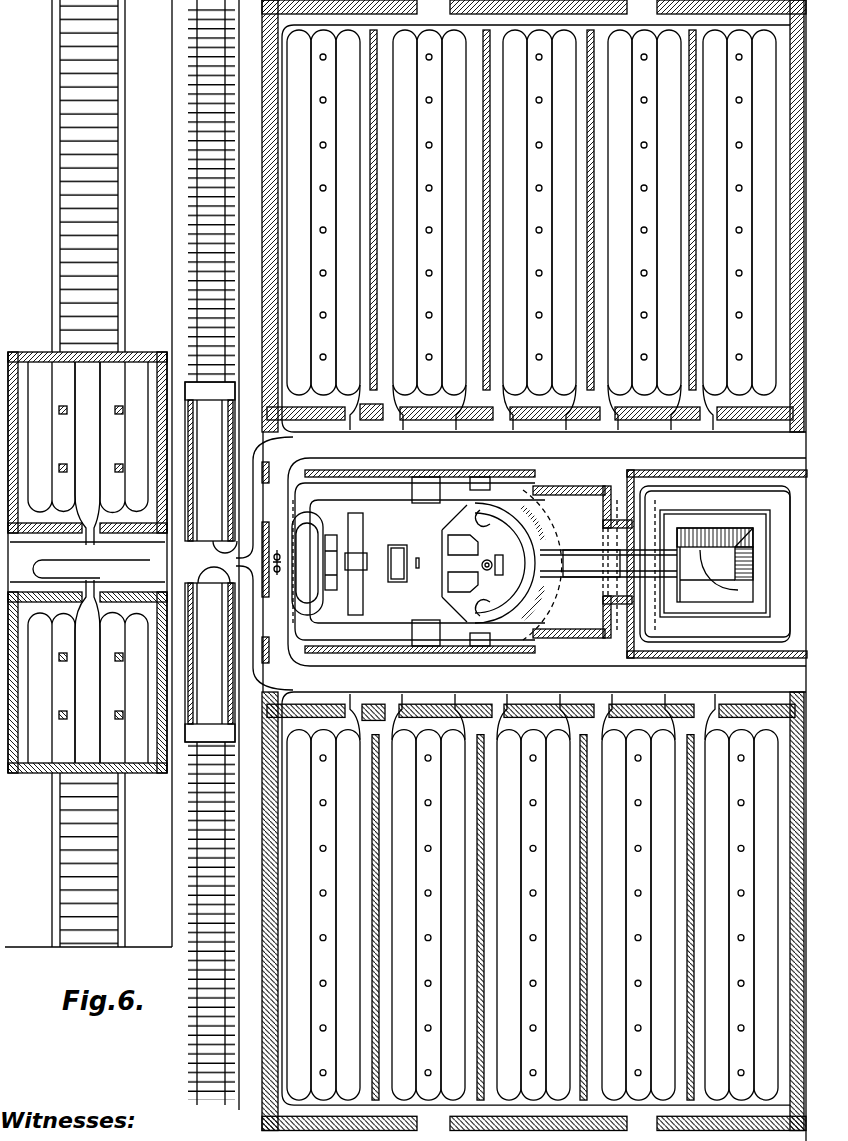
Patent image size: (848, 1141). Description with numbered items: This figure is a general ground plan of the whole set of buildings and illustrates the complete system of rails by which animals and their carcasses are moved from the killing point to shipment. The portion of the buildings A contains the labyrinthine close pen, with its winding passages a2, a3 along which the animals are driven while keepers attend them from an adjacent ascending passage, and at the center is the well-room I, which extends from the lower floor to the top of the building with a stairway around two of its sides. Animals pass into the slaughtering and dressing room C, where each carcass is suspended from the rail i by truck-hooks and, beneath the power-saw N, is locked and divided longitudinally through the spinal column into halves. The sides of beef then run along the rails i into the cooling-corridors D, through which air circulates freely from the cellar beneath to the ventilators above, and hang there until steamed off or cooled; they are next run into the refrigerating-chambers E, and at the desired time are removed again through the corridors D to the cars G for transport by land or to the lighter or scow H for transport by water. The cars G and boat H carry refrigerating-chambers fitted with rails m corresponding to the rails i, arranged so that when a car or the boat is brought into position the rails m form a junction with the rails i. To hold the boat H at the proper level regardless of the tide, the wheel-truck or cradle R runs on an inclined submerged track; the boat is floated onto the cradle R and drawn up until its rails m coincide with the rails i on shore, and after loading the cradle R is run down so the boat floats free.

The refrigerating-chambers E is at (534, 565).
The rails i is at (506, 575).
The cooling-corridors D is at (534, 563).
The slaughtering and dressing room C is at (469, 562).
The power-saw N is at (275, 556).
The labyrinthine close pen building portion A is at (715, 567).
The passage a2 is at (717, 564).
The passage a3 is at (715, 566).
The well-room I is at (715, 565).
The cars G is at (211, 562).
The lighter or scow H is at (87, 562).
The rails m is at (112, 570).
The wheel-truck or cradle R is at (88, 473).